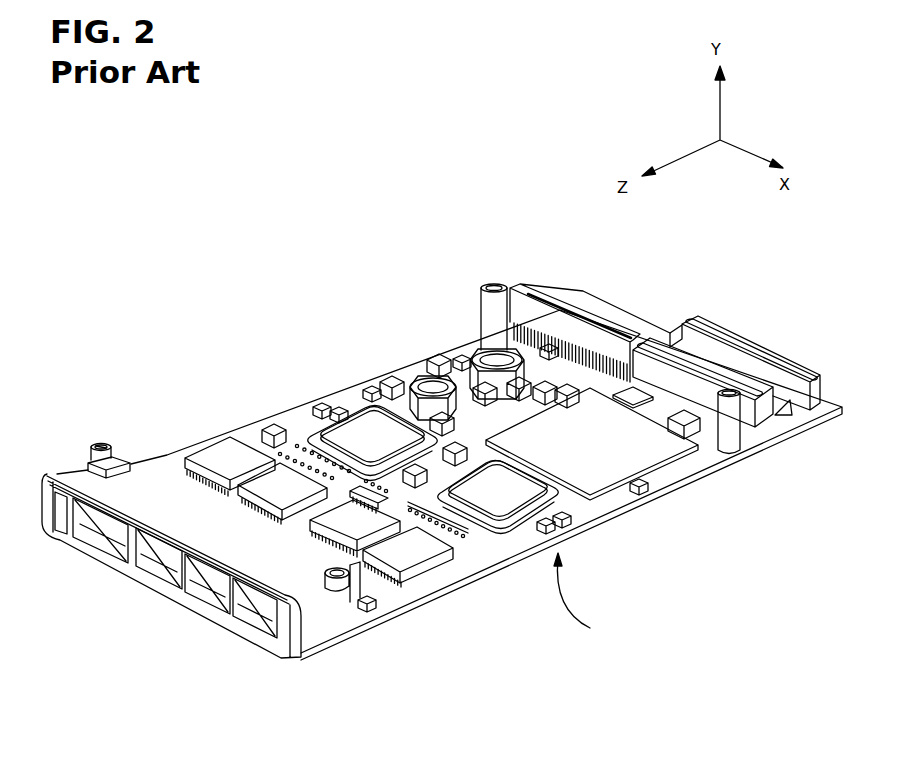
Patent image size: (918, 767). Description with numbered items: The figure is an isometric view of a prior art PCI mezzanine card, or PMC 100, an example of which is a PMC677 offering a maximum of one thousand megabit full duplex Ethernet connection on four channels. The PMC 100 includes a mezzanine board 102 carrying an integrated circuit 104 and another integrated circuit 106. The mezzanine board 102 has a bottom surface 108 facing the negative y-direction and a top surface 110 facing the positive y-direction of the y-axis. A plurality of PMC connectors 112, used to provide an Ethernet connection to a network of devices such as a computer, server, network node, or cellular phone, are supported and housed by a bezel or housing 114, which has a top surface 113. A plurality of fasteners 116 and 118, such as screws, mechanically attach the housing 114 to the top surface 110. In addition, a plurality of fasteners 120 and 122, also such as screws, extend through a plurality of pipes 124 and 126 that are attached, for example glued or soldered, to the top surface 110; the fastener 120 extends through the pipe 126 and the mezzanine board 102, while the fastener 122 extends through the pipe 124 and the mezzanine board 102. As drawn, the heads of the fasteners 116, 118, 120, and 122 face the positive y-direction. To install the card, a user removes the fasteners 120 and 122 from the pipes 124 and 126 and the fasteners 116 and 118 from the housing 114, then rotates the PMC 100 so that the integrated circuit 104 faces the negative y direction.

The PCI mezzanine card (PMC) 100 is at (291, 214).
The mezzanine board 102 is at (470, 550).
The integrated circuit 104 is at (232, 445).
The integrated circuit 106 is at (498, 503).
The bottom surface 108 is at (593, 599).
The top surface 110 is at (609, 503).
The PMC connectors 112 is at (100, 540).
The top surface of housing 113 is at (113, 463).
The bezel or housing 114 is at (327, 610).
The fastener 116 is at (100, 444).
The fastener 118 is at (343, 580).
The fastener 120 is at (727, 392).
The fastener 122 is at (492, 286).
The pipe 124 is at (488, 313).
The pipe 126 is at (728, 423).